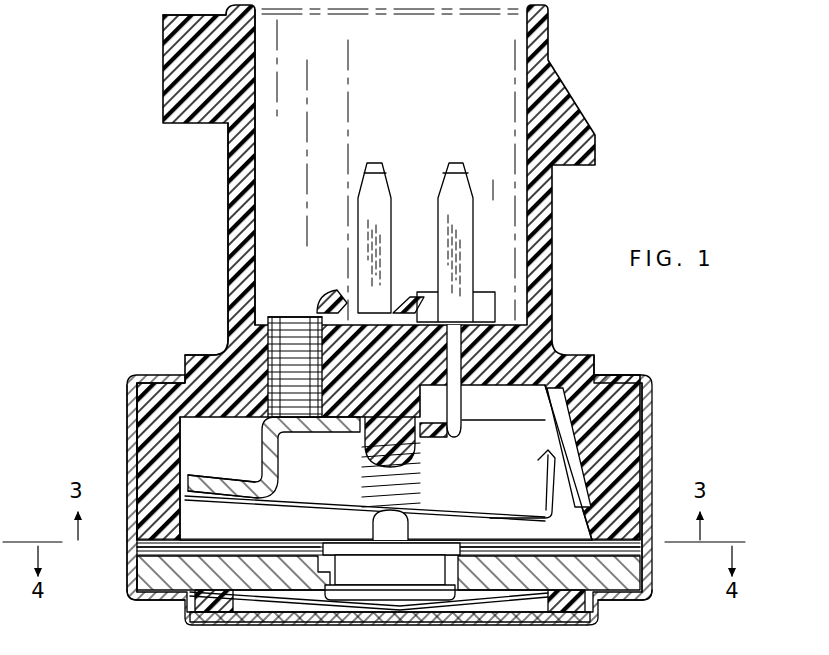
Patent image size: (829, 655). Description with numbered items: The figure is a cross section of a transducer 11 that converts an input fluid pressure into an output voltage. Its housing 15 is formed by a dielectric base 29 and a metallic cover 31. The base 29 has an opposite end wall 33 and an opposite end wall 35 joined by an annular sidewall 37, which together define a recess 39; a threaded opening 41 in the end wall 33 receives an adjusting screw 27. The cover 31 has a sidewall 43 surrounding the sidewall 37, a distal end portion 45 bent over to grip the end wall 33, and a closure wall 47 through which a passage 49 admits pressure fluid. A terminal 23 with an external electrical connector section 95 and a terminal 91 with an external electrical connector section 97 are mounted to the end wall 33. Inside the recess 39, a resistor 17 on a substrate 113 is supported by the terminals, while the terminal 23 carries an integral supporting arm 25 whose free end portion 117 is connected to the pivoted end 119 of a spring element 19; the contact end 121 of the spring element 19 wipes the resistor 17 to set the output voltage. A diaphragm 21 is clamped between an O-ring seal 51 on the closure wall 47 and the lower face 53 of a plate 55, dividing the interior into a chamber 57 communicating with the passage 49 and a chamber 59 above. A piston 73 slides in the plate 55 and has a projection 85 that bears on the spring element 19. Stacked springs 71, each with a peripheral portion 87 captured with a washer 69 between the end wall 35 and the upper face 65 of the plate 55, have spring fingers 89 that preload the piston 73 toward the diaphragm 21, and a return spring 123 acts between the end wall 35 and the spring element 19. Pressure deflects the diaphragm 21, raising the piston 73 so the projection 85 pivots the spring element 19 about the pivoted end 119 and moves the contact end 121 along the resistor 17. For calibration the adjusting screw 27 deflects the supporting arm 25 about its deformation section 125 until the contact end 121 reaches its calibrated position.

The transducer 11 is at (102, 90).
The housing 15 is at (582, 193).
The base 29 is at (228, 212).
The terminal 91 is at (362, 195).
The terminal 23 is at (470, 195).
The electrical connector section 97 is at (358, 258).
The electrical connector section 95 is at (473, 232).
The adjusting screw 27 is at (300, 316).
The threaded opening 41 is at (280, 322).
The opposite end wall 33 is at (212, 373).
The distal end portion 45 is at (622, 375).
The chamber 59 is at (130, 440).
The sidewall 37 is at (137, 478).
The opposite end wall 35 is at (137, 543).
The supporting arm 25 is at (266, 447).
The free end portion 117 is at (215, 478).
The pivoted end 119 is at (186, 495).
The spring element 19 is at (283, 506).
The projection 85 is at (372, 530).
The return spring 123 is at (418, 459).
The deformation section 125 is at (462, 433).
The resistor 17 is at (548, 406).
The substrate 113 is at (556, 448).
The contact end 121 is at (546, 488).
The sidewall 43 is at (652, 412).
The cover 31 is at (647, 446).
The recess 39 is at (628, 506).
The peripheral portion 87 is at (643, 553).
The washer 69 is at (137, 551).
The upper face 65 is at (137, 578).
The lower face 53 is at (152, 600).
The O-ring seal 51 is at (205, 612).
The passage 49 is at (287, 612).
The closure wall 47 is at (375, 622).
The diaphragm 21 is at (500, 606).
The chamber 57 is at (512, 606).
The plate 55 is at (632, 580).
The spring fingers 89 is at (549, 572).
The piston 73 is at (392, 580).
The stacked springs 71 is at (233, 572).